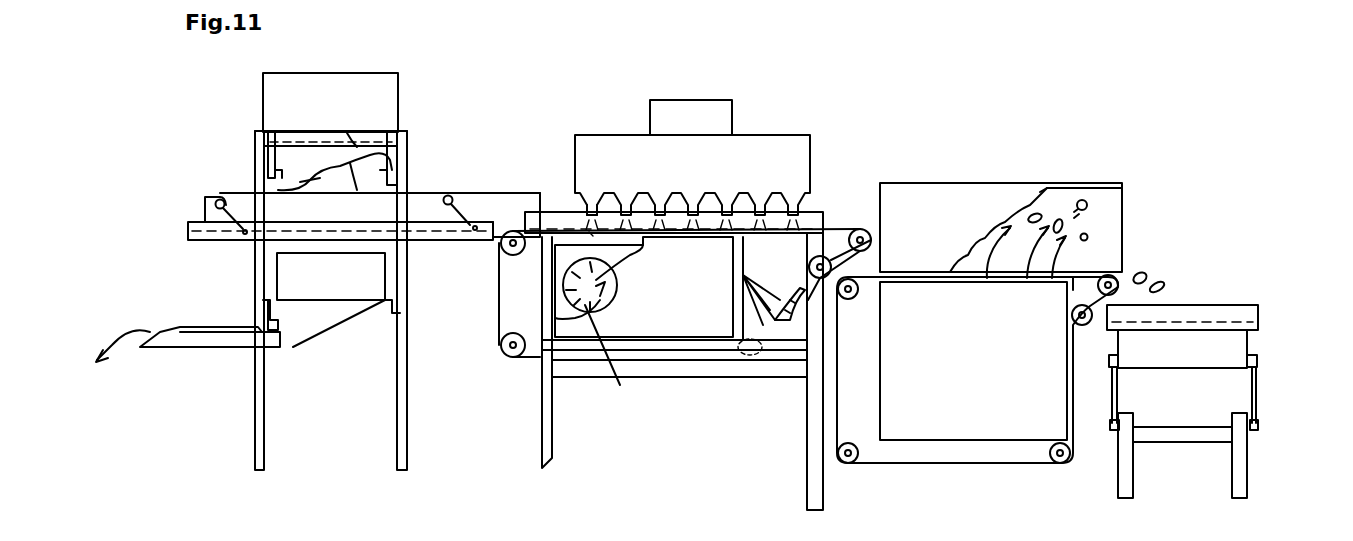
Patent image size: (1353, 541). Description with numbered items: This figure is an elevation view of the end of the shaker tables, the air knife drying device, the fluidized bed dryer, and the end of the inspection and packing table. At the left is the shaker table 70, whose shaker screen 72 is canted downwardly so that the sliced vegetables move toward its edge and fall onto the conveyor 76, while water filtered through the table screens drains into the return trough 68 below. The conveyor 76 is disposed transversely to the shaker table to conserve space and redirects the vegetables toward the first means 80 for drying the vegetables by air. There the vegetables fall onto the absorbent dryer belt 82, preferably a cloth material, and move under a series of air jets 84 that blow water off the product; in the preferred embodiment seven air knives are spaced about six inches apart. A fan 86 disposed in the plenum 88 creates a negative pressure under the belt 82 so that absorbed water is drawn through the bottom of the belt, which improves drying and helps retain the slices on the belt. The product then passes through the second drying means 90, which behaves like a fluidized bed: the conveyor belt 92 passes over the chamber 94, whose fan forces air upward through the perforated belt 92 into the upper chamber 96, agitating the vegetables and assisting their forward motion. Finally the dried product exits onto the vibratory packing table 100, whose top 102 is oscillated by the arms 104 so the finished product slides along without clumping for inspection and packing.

The return trough 68 is at (190, 348).
The shaker table 70 is at (246, 162).
The shaker screen 72 is at (360, 165).
The conveyor 76 is at (206, 216).
The first means for drying the vegetables by air 80 is at (746, 125).
The absorbent dryer belt 82 is at (500, 328).
The air jets 84 is at (592, 215).
The fan 86 is at (620, 378).
The plenum 88 is at (562, 261).
The second drying means 90 is at (936, 178).
The conveyor belt 92 is at (930, 463).
The chamber 94 is at (973, 361).
The upper chamber 96 is at (1096, 247).
The vibratory packing table 100 is at (1258, 340).
The top 102 is at (1185, 325).
The arms 104 is at (1256, 388).